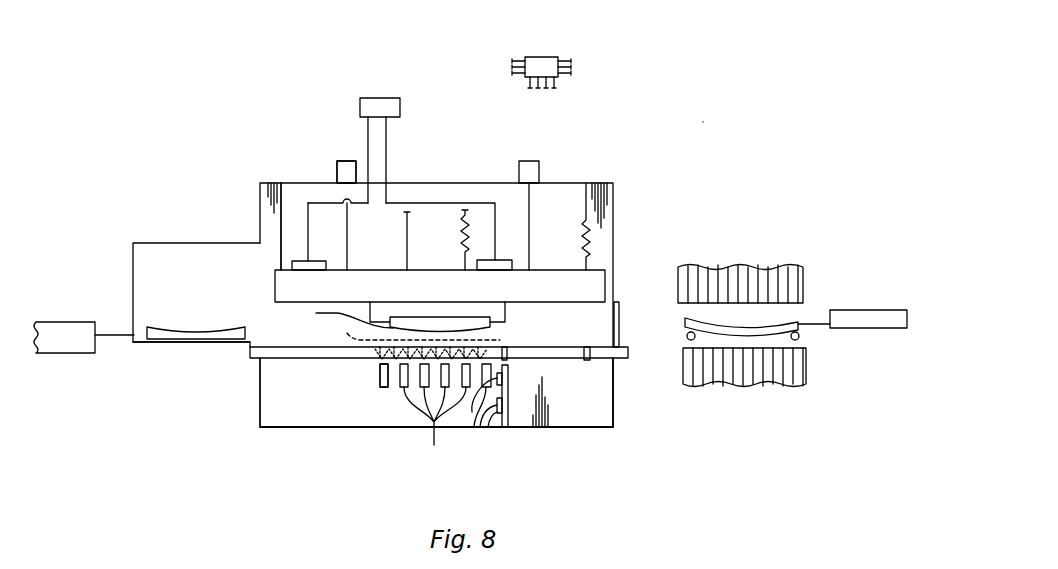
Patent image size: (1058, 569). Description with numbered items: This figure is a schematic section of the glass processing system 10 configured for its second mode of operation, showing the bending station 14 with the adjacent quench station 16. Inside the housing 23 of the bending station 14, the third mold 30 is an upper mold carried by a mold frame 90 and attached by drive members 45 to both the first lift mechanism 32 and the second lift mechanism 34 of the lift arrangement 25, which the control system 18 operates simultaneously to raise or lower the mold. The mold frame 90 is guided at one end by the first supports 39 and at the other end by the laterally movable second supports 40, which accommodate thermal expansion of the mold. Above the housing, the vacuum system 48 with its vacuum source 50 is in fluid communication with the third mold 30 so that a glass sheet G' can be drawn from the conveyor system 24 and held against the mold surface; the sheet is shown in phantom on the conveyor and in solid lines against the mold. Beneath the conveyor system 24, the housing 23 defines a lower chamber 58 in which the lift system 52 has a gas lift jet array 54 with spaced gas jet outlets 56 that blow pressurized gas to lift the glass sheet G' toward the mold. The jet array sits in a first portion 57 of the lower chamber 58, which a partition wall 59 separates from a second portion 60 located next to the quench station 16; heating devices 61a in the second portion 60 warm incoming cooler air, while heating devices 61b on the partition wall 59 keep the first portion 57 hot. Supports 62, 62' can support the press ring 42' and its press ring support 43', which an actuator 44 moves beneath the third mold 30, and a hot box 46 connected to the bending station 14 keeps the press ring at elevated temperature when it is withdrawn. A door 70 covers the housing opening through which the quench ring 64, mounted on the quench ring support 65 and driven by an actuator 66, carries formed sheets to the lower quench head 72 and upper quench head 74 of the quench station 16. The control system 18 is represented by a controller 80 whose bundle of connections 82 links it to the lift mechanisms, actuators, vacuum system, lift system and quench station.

The glass processing system 10 is at (704, 121).
The bending station 14 is at (282, 447).
The quench station 16 is at (810, 353).
The control system 18 is at (570, 61).
The housing 23 is at (614, 192).
The conveyor system 24 is at (573, 368).
The lift arrangement 25 is at (336, 171).
The third mold 30 is at (508, 318).
The first lift mechanism 32 is at (350, 161).
The second lift mechanism 34 is at (531, 161).
The first supports 39 is at (281, 240).
The second supports 40 is at (463, 241).
The press ring 42' is at (169, 297).
The press ring support 43' is at (130, 368).
The actuator 44 is at (57, 353).
The drive members 45 is at (347, 237).
The hot box 46 is at (185, 358).
The vacuum system 48 is at (362, 96).
The vacuum source 50 is at (402, 107).
The lift system 52 is at (379, 402).
The gas lift jet array 54 is at (370, 388).
The gas jet outlets 56 is at (435, 429).
The first portion 57 is at (327, 428).
The lower chamber 58 is at (266, 392).
The partition wall 59 is at (506, 415).
The second portion 60 is at (606, 426).
The heating devices 61a is at (571, 427).
The heating devices 61b is at (480, 423).
The support 62 is at (495, 334).
The support 62' is at (527, 340).
The quench ring 64 is at (798, 322).
The quench ring support 65 is at (812, 326).
The actuator 66 is at (870, 310).
The door 70 is at (620, 312).
The lower quench head 72 is at (805, 375).
The upper quench head 74 is at (805, 288).
The controller 80 is at (535, 57).
The bundle of connections 82 is at (566, 90).
The mold frame 90 is at (604, 296).
The glass sheet G' is at (398, 326).